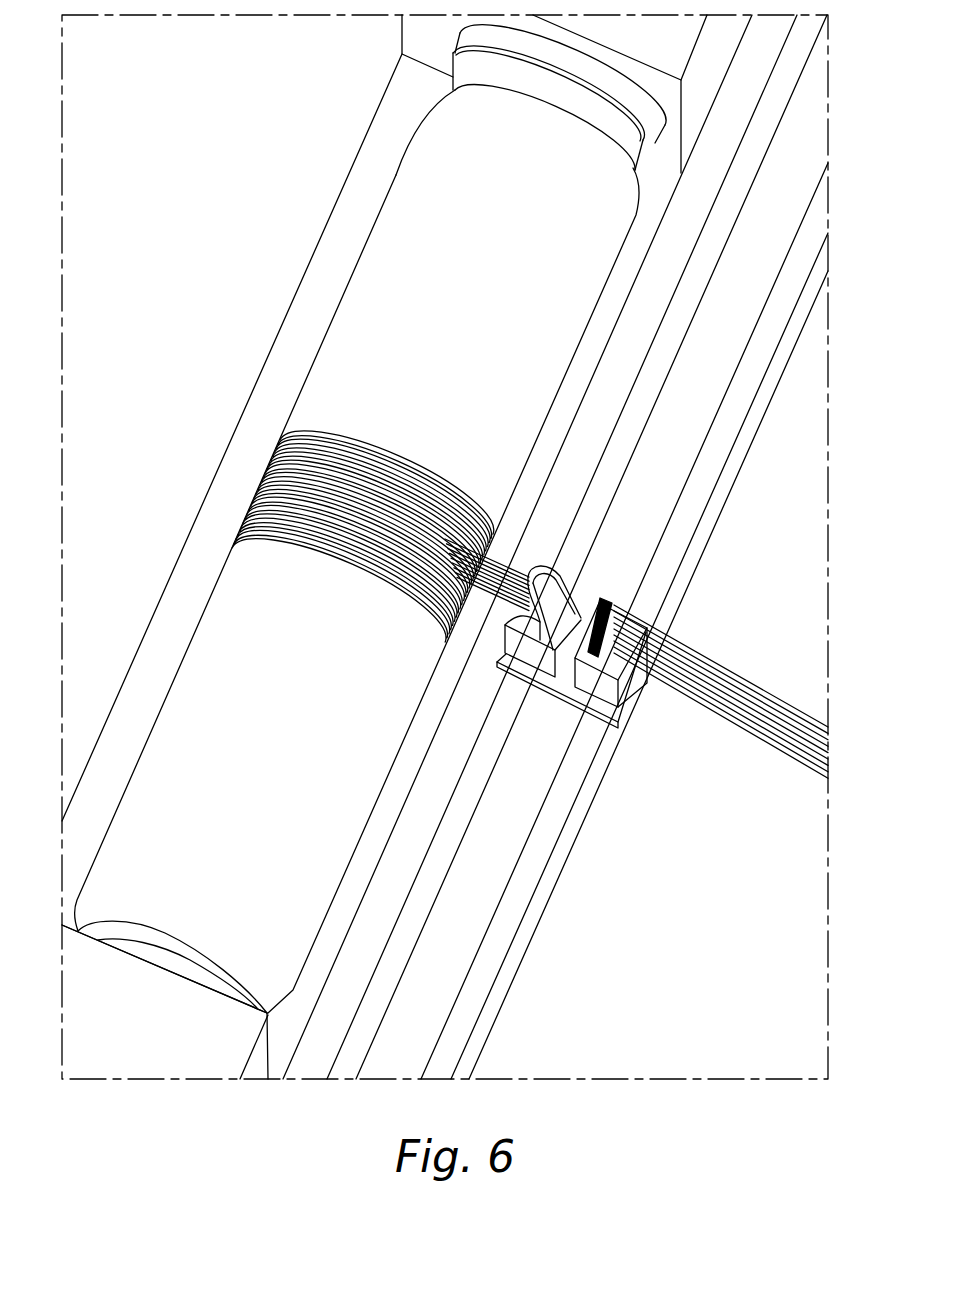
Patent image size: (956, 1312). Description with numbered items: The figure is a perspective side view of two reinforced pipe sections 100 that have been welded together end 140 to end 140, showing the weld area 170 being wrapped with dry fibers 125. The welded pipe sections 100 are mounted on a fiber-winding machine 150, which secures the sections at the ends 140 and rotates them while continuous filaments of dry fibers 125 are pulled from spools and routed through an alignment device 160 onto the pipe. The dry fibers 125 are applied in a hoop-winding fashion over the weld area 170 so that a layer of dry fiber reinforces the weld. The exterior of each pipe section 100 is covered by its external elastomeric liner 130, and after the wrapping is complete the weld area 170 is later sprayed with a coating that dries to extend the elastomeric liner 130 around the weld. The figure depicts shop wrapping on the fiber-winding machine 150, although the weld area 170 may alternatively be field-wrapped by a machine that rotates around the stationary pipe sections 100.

The reinforced pipe section 100 is at (222, 631).
The dry fibers 125 is at (516, 583).
The external elastomeric liner 130 is at (365, 283).
The end 140 is at (467, 82).
The fiber-winding machine 150 is at (463, 45).
The alignment device 160 is at (606, 597).
The weld area 170 is at (268, 493).